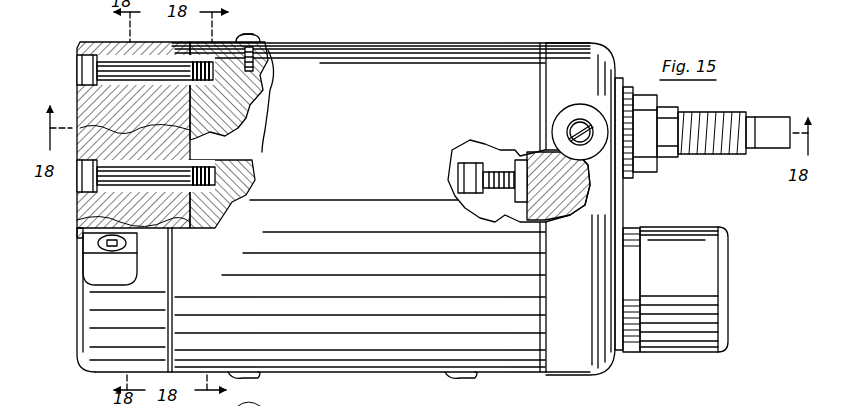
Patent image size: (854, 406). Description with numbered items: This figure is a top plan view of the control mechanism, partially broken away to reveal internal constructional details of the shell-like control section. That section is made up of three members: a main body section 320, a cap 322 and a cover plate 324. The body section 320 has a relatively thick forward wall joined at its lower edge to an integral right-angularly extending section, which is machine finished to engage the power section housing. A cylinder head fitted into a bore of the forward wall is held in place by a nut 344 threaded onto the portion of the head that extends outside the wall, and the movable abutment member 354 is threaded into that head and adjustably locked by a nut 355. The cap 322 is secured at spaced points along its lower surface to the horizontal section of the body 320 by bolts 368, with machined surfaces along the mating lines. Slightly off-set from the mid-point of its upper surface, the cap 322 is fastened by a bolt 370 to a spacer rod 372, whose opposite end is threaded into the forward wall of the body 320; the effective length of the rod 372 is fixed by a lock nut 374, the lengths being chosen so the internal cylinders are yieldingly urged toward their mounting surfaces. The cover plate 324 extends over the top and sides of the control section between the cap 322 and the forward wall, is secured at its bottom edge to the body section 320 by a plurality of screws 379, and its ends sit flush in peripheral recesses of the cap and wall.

The main body section 320 is at (607, 52).
The cap 322 is at (130, 42).
The cover plate 324 is at (415, 44).
The nut 344 is at (645, 172).
The movable abutment member 354 is at (736, 118).
The nut 355 is at (668, 162).
The bolts 368 is at (86, 69).
The bolt 370 is at (78, 182).
The spacer rod 372 is at (212, 152).
The lock nut 374 is at (522, 150).
The screws 379 is at (258, 42).